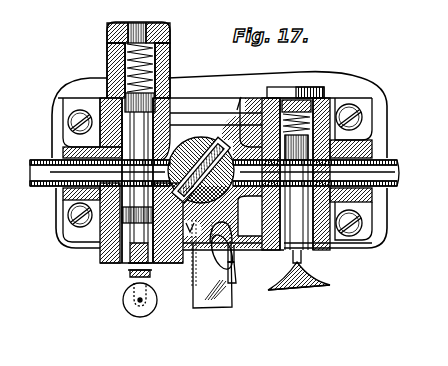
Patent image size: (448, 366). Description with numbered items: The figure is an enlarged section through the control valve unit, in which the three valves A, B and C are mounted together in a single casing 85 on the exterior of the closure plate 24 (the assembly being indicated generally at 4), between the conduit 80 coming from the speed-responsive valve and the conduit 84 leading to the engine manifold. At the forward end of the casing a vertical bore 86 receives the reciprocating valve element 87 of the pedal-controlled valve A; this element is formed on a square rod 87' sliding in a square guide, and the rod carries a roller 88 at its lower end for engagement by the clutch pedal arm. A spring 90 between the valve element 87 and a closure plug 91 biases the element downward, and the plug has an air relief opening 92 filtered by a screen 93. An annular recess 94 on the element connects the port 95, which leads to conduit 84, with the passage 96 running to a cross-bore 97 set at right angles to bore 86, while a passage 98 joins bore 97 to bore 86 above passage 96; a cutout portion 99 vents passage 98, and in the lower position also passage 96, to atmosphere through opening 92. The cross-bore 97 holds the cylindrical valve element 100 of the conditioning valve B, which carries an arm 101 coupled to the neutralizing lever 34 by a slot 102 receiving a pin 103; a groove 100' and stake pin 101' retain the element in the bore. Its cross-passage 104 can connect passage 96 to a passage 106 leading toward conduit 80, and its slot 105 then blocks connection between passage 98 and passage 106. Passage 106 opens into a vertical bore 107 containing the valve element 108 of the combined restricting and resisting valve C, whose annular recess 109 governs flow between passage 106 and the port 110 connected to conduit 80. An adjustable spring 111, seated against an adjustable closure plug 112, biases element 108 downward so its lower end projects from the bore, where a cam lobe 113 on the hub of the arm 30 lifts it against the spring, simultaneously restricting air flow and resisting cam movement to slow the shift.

The closure plate 4 is at (368, 73).
The pedal-controlled valve A is at (98, 87).
The conditioning valve B is at (226, 112).
The combined restricting and resisting valve C is at (317, 88).
The closure plate 24 is at (379, 112).
The arm 30 is at (302, 292).
The neutralizing lever 34 is at (237, 308).
The conduit 80 is at (399, 175).
The conduit 84 is at (30, 170).
The casing 85 is at (194, 110).
The vertical bore 86 is at (100, 250).
The valve element 87 is at (70, 123).
The square rod 87' is at (122, 285).
The roller 88 is at (155, 311).
The spring 90 is at (165, 44).
The closure plug 91 is at (165, 35).
The air relief opening 92 is at (140, 25).
The screen 93 is at (140, 23).
The annular recess 94 is at (100, 207).
The port 95 is at (97, 203).
The passage 96 is at (167, 264).
The bore 97 is at (238, 143).
The passage 98 is at (175, 113).
The cutout portion 99 is at (150, 110).
The cylindrical valve element 100 is at (161, 215).
The groove 100' is at (180, 296).
The arm 101 is at (241, 257).
The stake pin 101' is at (236, 232).
The slot 102 is at (234, 283).
The pin 103 is at (237, 261).
The cross-passage 104 is at (251, 93).
The slot 105 is at (258, 80).
The passage 106 is at (249, 204).
The vertical bore 107 is at (370, 242).
The valve element 108 is at (335, 207).
The annular recess 109 is at (315, 150).
The port 110 is at (306, 153).
The adjustable spring 111 is at (294, 88).
The closure plug 112 is at (284, 87).
The cam lobe 113 is at (318, 268).